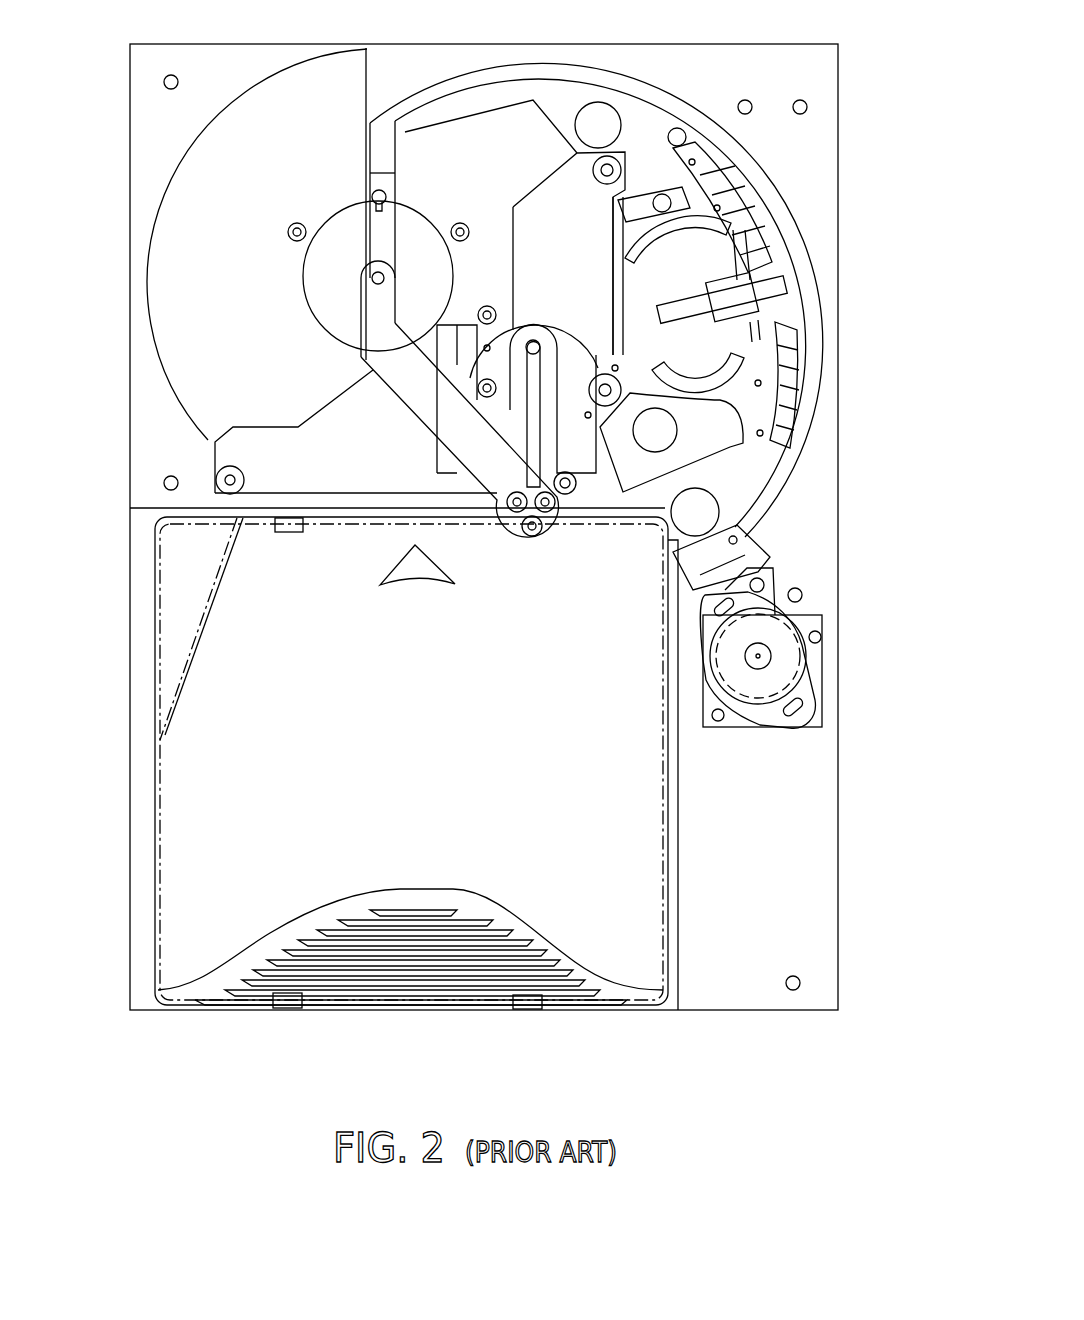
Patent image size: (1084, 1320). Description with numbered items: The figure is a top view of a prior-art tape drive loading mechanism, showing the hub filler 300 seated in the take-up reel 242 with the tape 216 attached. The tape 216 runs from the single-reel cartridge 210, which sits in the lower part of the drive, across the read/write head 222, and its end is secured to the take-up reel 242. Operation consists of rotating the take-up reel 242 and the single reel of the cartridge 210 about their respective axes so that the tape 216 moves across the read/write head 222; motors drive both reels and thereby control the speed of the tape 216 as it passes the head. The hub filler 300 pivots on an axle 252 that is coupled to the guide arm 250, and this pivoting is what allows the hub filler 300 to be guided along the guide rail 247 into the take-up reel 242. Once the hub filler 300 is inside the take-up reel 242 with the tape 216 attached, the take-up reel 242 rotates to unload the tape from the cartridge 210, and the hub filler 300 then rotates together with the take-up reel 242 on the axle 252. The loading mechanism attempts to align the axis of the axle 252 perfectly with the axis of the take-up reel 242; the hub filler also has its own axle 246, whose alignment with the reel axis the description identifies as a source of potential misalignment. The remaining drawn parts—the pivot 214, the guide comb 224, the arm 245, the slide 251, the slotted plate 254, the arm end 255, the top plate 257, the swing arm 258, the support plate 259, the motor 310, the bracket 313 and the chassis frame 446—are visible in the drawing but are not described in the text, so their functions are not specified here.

The cartridge 210 is at (670, 848).
The pivot pin 214 is at (372, 193).
The tape 216 is at (568, 107).
The read/write head 222 is at (775, 310).
The toothed guide comb 224 is at (766, 257).
The take-up reel 242 is at (173, 423).
The pivot arm 245 is at (372, 262).
The axle 246 is at (318, 488).
The guide rail 247 is at (786, 205).
The guide arm 250 is at (420, 430).
The slide bar 251 is at (607, 287).
The axle 252 is at (322, 326).
The slotted plate 254 is at (533, 340).
The arm end 255 is at (500, 405).
The top plate 257 is at (513, 272).
The swing arm 258 is at (412, 396).
The support plate 259 is at (523, 290).
The hub filler 300 is at (372, 217).
The drive motor 310 is at (790, 667).
The motor bracket 313 is at (775, 543).
The chassis frame 446 is at (832, 483).